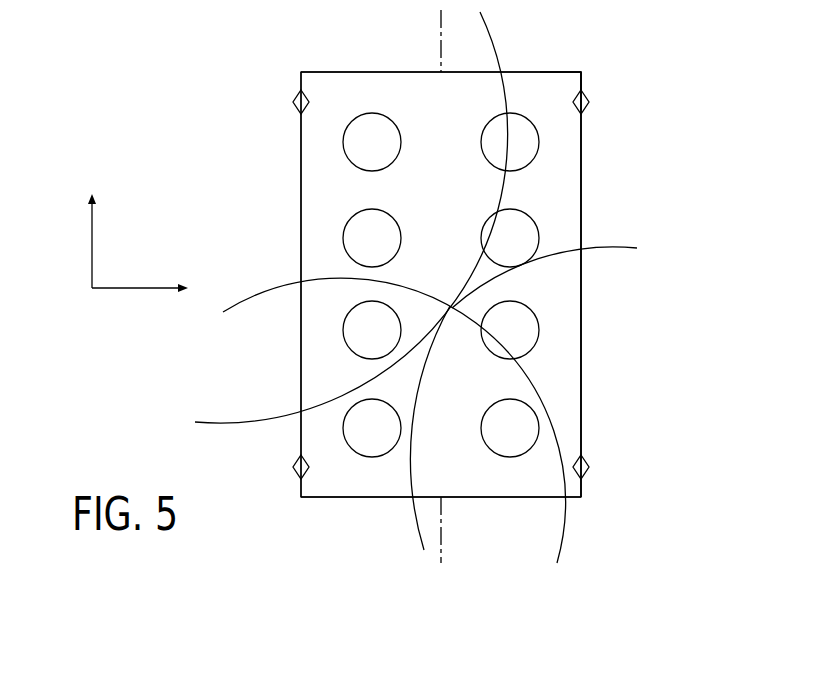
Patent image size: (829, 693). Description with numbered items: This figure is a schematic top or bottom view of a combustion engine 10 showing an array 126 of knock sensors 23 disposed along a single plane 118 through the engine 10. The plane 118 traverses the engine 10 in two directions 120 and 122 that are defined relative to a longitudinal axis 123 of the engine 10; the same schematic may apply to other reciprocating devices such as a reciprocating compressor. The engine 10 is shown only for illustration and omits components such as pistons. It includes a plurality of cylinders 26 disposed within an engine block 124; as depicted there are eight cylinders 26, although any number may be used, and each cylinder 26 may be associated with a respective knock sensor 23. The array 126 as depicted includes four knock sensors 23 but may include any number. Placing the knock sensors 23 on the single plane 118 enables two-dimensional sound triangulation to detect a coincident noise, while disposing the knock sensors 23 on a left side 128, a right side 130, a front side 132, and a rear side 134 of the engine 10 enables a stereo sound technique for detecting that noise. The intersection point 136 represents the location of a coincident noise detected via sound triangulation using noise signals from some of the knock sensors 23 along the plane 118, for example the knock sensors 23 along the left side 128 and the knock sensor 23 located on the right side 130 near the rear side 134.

The combustion engine 10 is at (198, 149).
The knock sensors 23 is at (296, 96).
The cylinders 26 is at (370, 172).
The single plane 118 is at (588, 335).
The direction 120 is at (92, 246).
The direction 122 is at (137, 289).
The longitudinal axis 123 is at (442, 540).
The engine block 124 is at (582, 400).
The array 126 is at (599, 65).
The left side 128 is at (301, 244).
The right side 130 is at (582, 270).
The front side 132 is at (366, 72).
The rear side 134 is at (495, 498).
The intersection point 136 is at (458, 330).